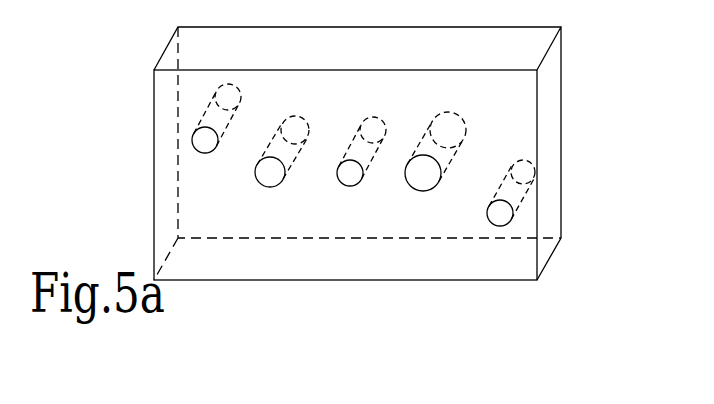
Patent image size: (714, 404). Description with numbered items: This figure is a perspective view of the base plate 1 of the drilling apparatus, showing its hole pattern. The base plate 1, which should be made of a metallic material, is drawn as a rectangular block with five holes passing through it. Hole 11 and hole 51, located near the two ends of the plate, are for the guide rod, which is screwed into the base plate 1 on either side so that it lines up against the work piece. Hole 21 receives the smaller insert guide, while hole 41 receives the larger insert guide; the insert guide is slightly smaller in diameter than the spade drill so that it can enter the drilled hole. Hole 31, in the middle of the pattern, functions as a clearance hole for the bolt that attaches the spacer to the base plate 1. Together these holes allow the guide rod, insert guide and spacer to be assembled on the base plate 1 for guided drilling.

The base plate 1 is at (561, 133).
The hole 11 is at (205, 140).
The hole 21 is at (270, 172).
The hole 31 is at (350, 173).
The hole 41 is at (423, 173).
The hole 51 is at (500, 213).